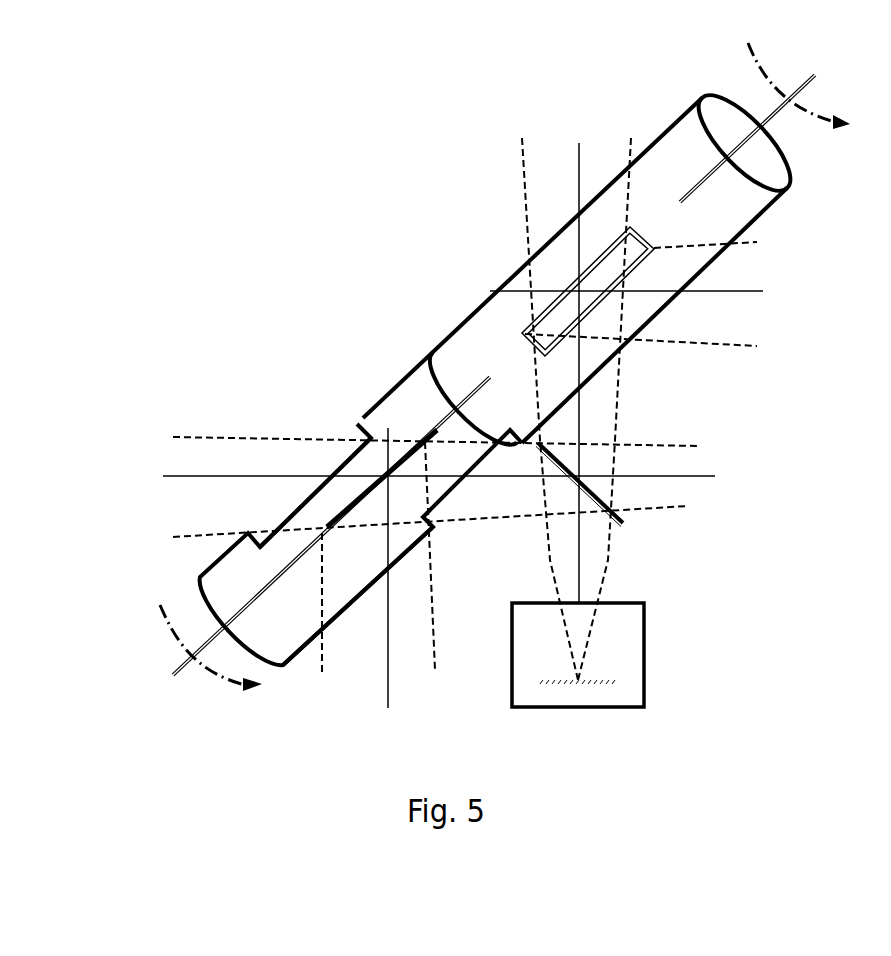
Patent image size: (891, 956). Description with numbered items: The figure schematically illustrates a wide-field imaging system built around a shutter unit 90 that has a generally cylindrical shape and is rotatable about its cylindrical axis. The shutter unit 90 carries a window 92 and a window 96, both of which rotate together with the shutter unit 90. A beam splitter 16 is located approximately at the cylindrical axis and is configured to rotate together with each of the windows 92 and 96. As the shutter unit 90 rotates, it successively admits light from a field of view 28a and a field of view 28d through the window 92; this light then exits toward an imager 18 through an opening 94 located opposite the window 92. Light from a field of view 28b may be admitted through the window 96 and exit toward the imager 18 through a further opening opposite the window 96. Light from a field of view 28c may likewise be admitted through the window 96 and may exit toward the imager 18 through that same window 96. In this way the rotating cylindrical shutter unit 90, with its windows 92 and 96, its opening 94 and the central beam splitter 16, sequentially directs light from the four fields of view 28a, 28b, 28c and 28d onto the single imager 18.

The beam splitter 16 is at (558, 327).
The imager 18 is at (637, 668).
The field of view 28a is at (332, 470).
The field of view 28b is at (562, 194).
The field of view 28c is at (727, 322).
The field of view 28d is at (410, 638).
The shutter unit 90 is at (348, 328).
The window 92 is at (263, 512).
The opening 94 is at (468, 493).
The window 96 is at (601, 305).